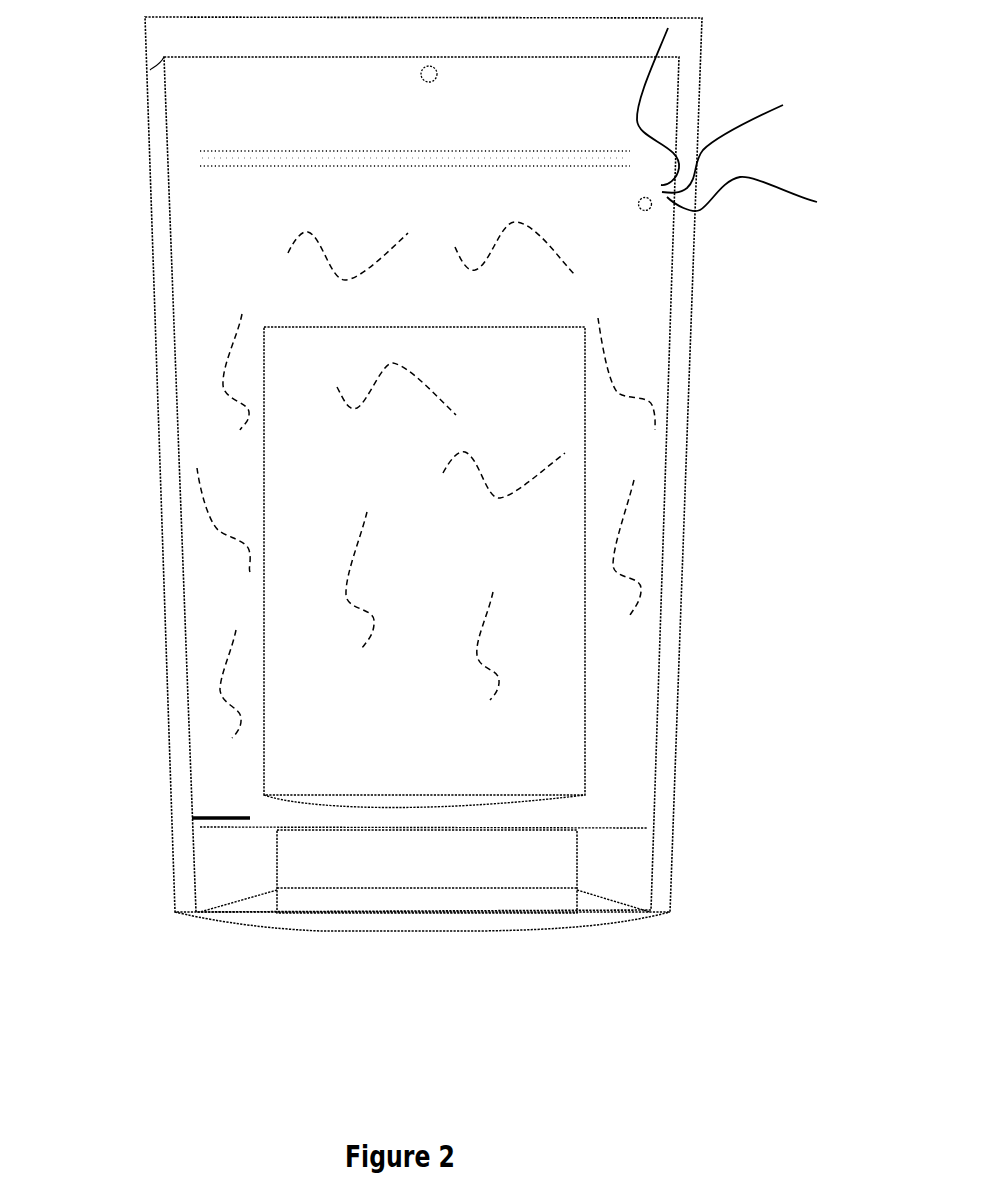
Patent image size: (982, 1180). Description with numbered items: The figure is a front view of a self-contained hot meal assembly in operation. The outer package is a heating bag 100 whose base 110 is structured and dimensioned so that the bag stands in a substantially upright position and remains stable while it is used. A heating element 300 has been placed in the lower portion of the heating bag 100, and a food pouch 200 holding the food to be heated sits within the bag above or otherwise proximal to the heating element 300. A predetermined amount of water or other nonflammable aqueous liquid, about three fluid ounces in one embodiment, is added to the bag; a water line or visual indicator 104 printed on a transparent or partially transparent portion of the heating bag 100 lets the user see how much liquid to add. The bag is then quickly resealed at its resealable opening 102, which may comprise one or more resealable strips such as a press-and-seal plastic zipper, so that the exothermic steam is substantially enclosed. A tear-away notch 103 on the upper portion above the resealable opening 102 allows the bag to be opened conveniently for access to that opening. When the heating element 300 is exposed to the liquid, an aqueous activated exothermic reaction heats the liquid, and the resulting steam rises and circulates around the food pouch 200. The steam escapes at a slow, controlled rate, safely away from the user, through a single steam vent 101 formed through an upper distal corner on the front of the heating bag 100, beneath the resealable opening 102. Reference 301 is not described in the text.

The heating bag 100 is at (168, 745).
The steam vent 101 is at (645, 213).
The resealable opening 102 is at (200, 168).
The tear-away notch 103 is at (163, 72).
The water line or visual indicator 104 is at (208, 820).
The base 110 is at (322, 932).
The food pouch 200 is at (585, 723).
The heating element 300 is at (560, 840).
The compartment wall 301 is at (621, 888).